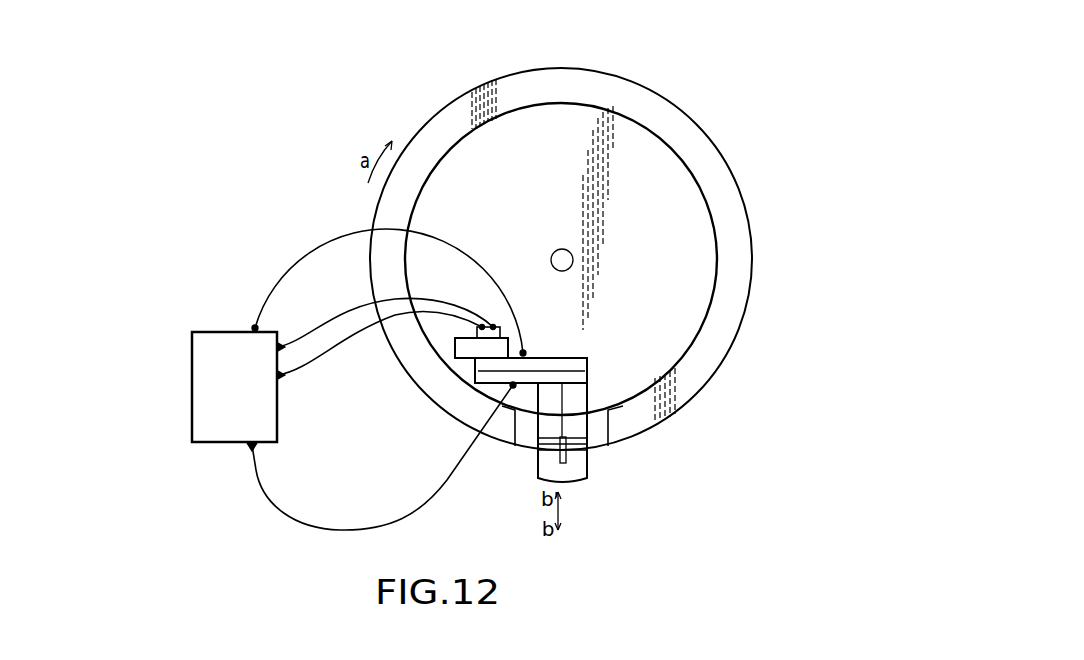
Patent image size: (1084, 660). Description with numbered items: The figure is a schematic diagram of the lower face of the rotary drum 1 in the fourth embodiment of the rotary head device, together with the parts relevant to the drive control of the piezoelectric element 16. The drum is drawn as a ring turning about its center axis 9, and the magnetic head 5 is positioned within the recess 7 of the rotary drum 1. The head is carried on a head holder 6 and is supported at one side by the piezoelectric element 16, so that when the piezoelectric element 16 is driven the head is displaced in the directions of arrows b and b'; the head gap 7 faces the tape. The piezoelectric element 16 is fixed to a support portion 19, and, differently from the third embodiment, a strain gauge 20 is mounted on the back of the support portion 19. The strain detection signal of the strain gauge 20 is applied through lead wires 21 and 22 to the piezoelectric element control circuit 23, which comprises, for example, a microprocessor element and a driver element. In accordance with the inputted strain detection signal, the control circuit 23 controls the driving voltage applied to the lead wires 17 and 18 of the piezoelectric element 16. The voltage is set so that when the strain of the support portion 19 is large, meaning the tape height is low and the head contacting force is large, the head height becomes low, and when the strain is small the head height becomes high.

The rotary drum 1 is at (693, 378).
The magnetic head 5 is at (572, 483).
The head holder 6 is at (572, 475).
The recess 7 is at (528, 455).
The rotation axis 9 is at (573, 260).
The piezoelectric element 16 is at (588, 374).
The lead wire 17 is at (285, 272).
The lead wire 18 is at (276, 518).
The support portion 19 is at (466, 353).
The strain gauge 20 is at (477, 333).
The lead wire 21 is at (334, 313).
The lead wire 22 is at (357, 330).
The piezoelectric element control circuit 23 is at (222, 330).